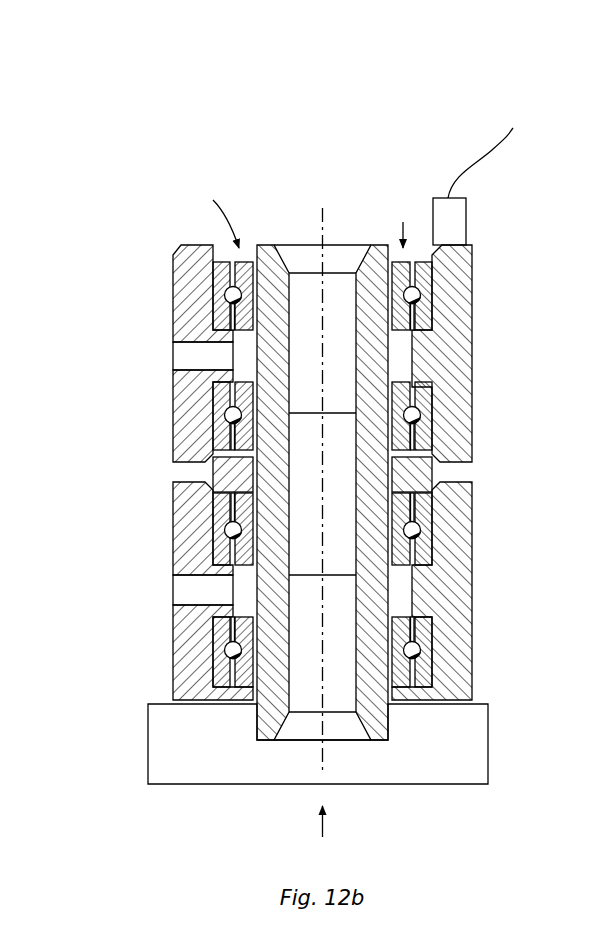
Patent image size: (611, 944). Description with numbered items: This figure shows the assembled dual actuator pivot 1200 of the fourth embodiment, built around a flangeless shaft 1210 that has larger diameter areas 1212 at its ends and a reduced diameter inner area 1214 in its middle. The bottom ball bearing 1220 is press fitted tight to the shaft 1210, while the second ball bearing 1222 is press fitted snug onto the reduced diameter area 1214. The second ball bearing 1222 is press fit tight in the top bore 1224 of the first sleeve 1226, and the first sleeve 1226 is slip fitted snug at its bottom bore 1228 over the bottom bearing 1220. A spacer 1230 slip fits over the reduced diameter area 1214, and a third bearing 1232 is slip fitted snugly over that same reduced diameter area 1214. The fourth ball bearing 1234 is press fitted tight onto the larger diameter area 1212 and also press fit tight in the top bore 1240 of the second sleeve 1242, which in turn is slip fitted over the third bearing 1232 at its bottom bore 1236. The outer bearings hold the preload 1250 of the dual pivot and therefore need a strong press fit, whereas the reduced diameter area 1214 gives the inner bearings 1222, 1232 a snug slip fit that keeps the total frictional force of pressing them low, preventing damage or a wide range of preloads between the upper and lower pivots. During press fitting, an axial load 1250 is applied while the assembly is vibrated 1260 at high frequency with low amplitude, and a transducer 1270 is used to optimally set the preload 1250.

The dual actuator pivot 1200 is at (104, 87).
The flangeless shaft 1210 is at (297, 230).
The larger diameter area 1212 is at (233, 282).
The reduced diameter inner area 1214 is at (213, 478).
The bottom ball bearing 1220 is at (415, 633).
The second ball bearing 1222 is at (425, 505).
The top bore of the first sleeve 1224 is at (420, 545).
The first sleeve 1226 is at (472, 568).
The bottom bore of the first sleeve 1228 is at (425, 672).
The spacer 1230 is at (432, 470).
The third bearing 1232 is at (420, 433).
The fourth ball bearing 1234 is at (420, 283).
The bottom bore of the second sleeve 1236 is at (425, 393).
The top bore of the second sleeve 1240 is at (420, 310).
The second sleeve 1242 is at (472, 335).
The preload 1250 is at (291, 213).
The vibration 1260 is at (322, 825).
The transducer 1270 is at (437, 198).